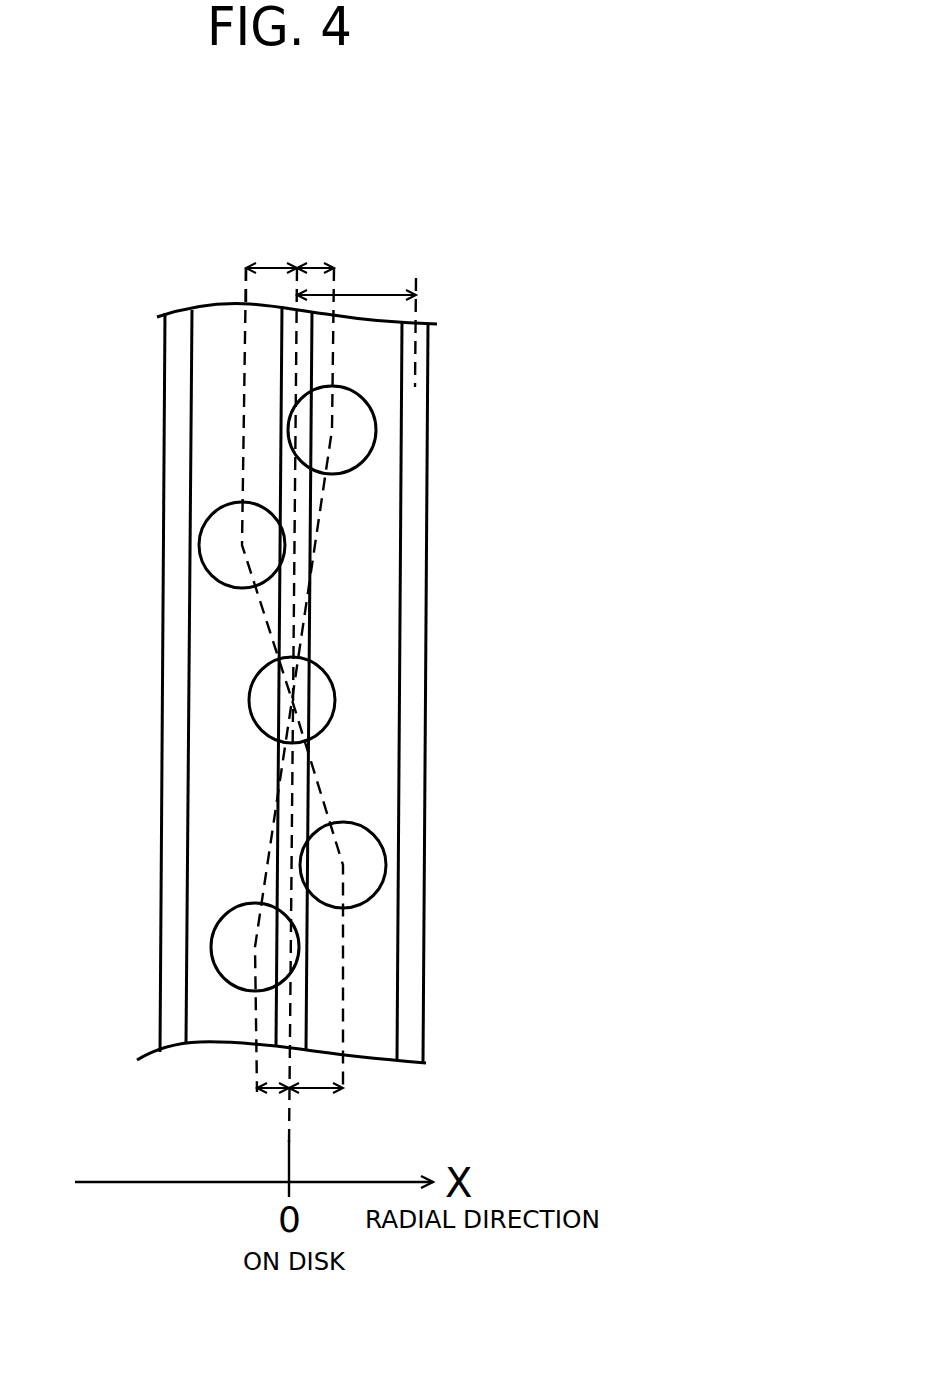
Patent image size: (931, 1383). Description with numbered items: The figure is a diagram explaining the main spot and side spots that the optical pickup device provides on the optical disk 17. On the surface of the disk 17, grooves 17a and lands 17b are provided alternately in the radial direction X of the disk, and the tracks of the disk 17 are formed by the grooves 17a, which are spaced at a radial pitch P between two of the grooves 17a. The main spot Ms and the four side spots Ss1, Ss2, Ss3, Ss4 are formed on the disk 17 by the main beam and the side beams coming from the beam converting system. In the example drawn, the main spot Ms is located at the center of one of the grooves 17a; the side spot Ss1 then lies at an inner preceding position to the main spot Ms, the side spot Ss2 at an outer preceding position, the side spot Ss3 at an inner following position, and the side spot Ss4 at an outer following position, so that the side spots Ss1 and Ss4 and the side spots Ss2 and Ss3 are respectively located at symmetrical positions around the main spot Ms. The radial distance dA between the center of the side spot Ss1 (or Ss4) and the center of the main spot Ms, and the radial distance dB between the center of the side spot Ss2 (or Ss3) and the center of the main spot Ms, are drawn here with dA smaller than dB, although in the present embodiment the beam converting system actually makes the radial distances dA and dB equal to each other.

The optical disk 17 is at (437, 323).
The grooves 17a is at (183, 370).
The lands 17b is at (233, 345).
The side spot Ss1 is at (287, 423).
The side spot Ss2 is at (198, 545).
The side spot Ss3 is at (297, 865).
The side spot Ss4 is at (213, 958).
The main spot Ms is at (248, 698).
The radial distance dA is at (312, 263).
The radial distance dB is at (270, 263).
The radial pitch P is at (356, 279).